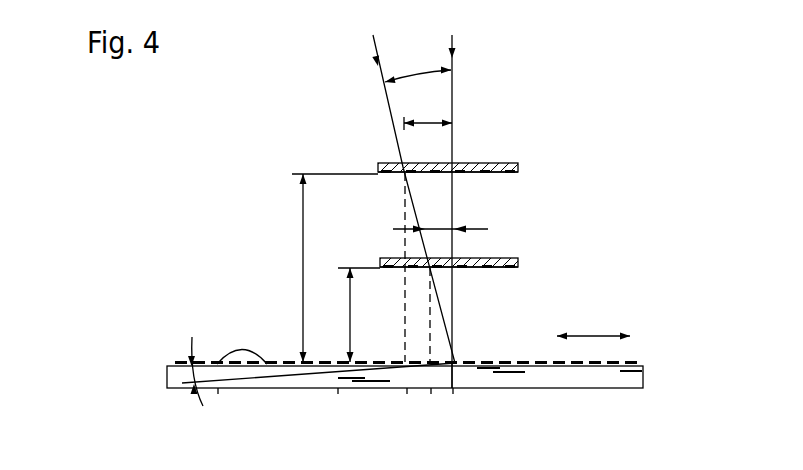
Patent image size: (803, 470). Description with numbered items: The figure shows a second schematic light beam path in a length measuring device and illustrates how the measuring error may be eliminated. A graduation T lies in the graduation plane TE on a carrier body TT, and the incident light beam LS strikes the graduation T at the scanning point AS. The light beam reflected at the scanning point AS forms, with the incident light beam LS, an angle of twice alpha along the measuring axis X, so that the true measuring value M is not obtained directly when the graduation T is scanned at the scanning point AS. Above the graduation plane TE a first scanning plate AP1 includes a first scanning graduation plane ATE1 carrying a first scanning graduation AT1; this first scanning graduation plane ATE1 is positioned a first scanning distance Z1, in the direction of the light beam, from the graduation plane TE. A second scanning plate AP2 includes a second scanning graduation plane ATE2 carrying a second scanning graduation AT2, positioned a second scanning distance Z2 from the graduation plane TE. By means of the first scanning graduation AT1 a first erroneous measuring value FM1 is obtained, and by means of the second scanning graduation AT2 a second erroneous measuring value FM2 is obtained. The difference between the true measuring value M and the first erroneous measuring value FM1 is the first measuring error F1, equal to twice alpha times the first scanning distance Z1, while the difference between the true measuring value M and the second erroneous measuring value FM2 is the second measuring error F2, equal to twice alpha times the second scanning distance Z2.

The incident light beam LS is at (375, 57).
The second measuring error F2 is at (428, 114).
The first measuring error F1 is at (440, 219).
The second scanning plate AP2 is at (505, 163).
The second scanning graduation AT2 is at (485, 173).
The second scanning graduation plane ATE2 is at (513, 172).
The second erroneous measuring value FM2 is at (405, 177).
The first scanning plate AP1 is at (507, 257).
The first scanning graduation AT1 is at (507, 268).
The first scanning graduation plane ATE1 is at (511, 268).
The first erroneous measuring value FM1 is at (430, 268).
The second scanning distance Z2 is at (327, 268).
The first scanning distance Z1 is at (353, 315).
The table / target carrier TT is at (594, 381).
The graduation plane TE is at (638, 362).
The true measuring value M is at (466, 349).
The scanning point AS is at (458, 366).
The graduation T is at (242, 348).
The measuring axis X is at (593, 326).